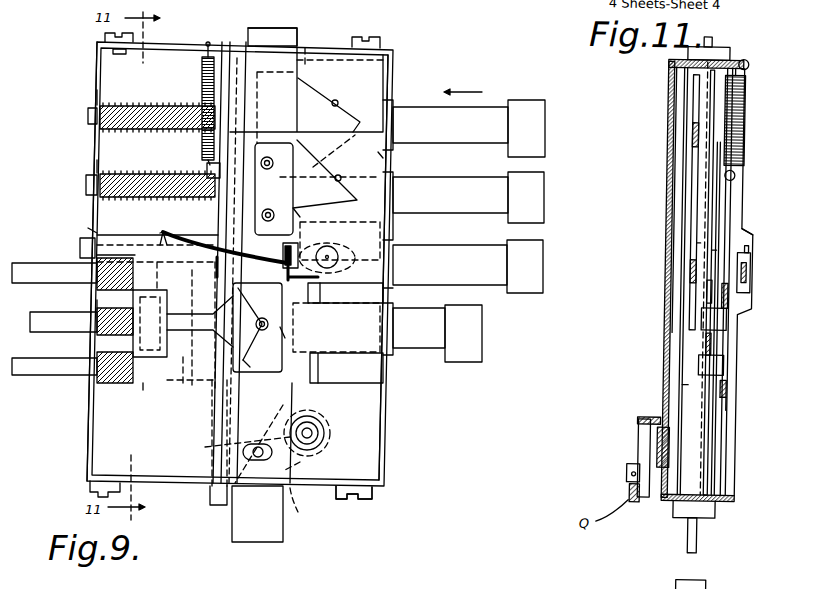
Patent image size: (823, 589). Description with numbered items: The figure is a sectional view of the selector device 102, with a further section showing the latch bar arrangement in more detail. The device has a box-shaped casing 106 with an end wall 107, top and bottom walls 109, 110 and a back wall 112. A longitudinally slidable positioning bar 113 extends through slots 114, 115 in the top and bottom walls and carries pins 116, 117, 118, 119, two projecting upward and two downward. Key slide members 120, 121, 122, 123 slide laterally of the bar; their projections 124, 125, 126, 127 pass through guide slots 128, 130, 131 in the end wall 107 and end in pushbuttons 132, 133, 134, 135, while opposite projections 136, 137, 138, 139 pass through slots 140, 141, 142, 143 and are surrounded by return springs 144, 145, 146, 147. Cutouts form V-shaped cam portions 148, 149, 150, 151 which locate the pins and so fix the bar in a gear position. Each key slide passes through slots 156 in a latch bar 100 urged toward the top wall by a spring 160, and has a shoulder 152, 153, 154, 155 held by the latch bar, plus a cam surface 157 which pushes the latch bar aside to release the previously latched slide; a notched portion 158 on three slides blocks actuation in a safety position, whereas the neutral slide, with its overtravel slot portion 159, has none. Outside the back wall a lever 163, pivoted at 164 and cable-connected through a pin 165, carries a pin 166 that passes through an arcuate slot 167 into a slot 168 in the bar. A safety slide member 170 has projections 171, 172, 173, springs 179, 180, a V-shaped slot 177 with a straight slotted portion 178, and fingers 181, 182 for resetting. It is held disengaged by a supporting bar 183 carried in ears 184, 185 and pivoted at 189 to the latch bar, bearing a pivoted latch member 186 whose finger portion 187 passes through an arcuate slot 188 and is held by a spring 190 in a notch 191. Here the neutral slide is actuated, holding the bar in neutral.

In FIG. 9, the latch bar 100 is at (214, 506).
In FIG. 11, the latch bar 100 is at (705, 519).
In FIG. 9, the selector device 102 is at (398, 481).
In FIG. 11, the selector device 102 is at (742, 497).
In FIG. 9, the casing 106 is at (88, 442).
In FIG. 9, the end wall 107 is at (388, 440).
In FIG. 9, the top wall 109 is at (340, 46).
In FIG. 9, the bottom wall 110 is at (322, 490).
In FIG. 11, the back wall 112 is at (665, 324).
In FIG. 9, the positioning bar 113 is at (249, 542).
In FIG. 11, the positioning bar 113 is at (692, 543).
In FIG. 9, the slot 114 is at (306, 46).
In FIG. 9, the slot 115 is at (307, 508).
In FIG. 9, the pin 116 is at (268, 157).
In FIG. 9, the pin 117 is at (268, 210).
In FIG. 9, the pin 118 is at (224, 327).
In FIG. 9, the pin 119 is at (283, 322).
In FIG. 9, the key slide member 120 is at (388, 76).
In FIG. 11, the key slide member 120 is at (707, 109).
In FIG. 9, the key slide member 121 is at (380, 155).
In FIG. 11, the key slide member 121 is at (718, 243).
In FIG. 9, the key slide member 122 is at (385, 288).
In FIG. 11, the key slide member 122 is at (696, 244).
In FIG. 9, the key slide member 123 is at (318, 371).
In FIG. 11, the key slide member 123 is at (684, 391).
In FIG. 9, the projection 124 is at (475, 134).
In FIG. 9, the projection 125 is at (480, 206).
In FIG. 9, the projection 126 is at (480, 276).
In FIG. 9, the projection 127 is at (432, 350).
In FIG. 9, the guide slot 128 is at (388, 105).
In FIG. 9, the guide slot 130 is at (393, 240).
In FIG. 9, the guide slot 131 is at (388, 362).
In FIG. 9, the pushbutton 132 is at (528, 100).
In FIG. 9, the pushbutton 133 is at (530, 186).
In FIG. 9, the pushbutton 134 is at (530, 255).
In FIG. 9, the pushbutton 135 is at (484, 325).
In FIG. 9, the projection 136 is at (88, 122).
In FIG. 11, the projection 136 is at (690, 133).
In FIG. 9, the projection 137 is at (86, 180).
In FIG. 11, the projection 137 is at (735, 200).
In FIG. 9, the projection 138 is at (80, 251).
In FIG. 11, the projection 138 is at (690, 272).
In FIG. 9, the projection 139 is at (50, 332).
In FIG. 11, the projection 139 is at (707, 340).
In FIG. 9, the slot 140 is at (97, 97).
In FIG. 9, the slot 141 is at (97, 165).
In FIG. 9, the slot 142 is at (88, 233).
In FIG. 9, the slot 143 is at (93, 306).
In FIG. 9, the spring 144 is at (155, 105).
In FIG. 9, the spring 145 is at (155, 173).
In FIG. 9, the spring 146 is at (128, 257).
In FIG. 9, the spring 147 is at (115, 333).
In FIG. 9, the V-shaped cam portion 148 is at (337, 102).
In FIG. 9, the V-shaped cam portion 149 is at (338, 176).
In FIG. 9, the V-shaped cam portion 150 is at (317, 210).
In FIG. 9, the V-shaped cam portion 151 is at (255, 354).
In FIG. 9, the shoulder 152 is at (303, 204).
In FIG. 9, the shoulder 153 is at (312, 230).
In FIG. 9, the shoulder 154 is at (352, 330).
In FIG. 9, the shoulder 155 is at (192, 402).
In FIG. 11, the slots 156 is at (690, 78).
In FIG. 9, the cam surface 157 is at (207, 166).
In FIG. 9, the notched portion 158 is at (170, 318).
In FIG. 9, the overtravel slot portion 159 is at (295, 342).
In FIG. 9, the spring 160 is at (204, 72).
In FIG. 11, the spring 160 is at (745, 84).
In FIG. 9, the lever 163 is at (300, 462).
In FIG. 9, the pivot 164 is at (312, 433).
In FIG. 9, the pin 165 is at (215, 463).
In FIG. 11, the pin 165 is at (630, 480).
In FIG. 9, the pin 166 is at (258, 445).
In FIG. 9, the arcuate slot 167 is at (288, 411).
In FIG. 9, the slot 168 is at (247, 450).
In FIG. 9, the safety slide member 170 is at (143, 385).
In FIG. 11, the safety slide member 170 is at (735, 382).
In FIG. 9, the projection 171 is at (52, 375).
In FIG. 11, the projection 171 is at (740, 399).
In FIG. 9, the projection 172 is at (28, 283).
In FIG. 11, the projection 172 is at (730, 297).
In FIG. 9, the projection 173 is at (393, 333).
In FIG. 9, the V-shaped slot 177 is at (213, 365).
In FIG. 9, the straight slotted portion 178 is at (185, 335).
In FIG. 9, the spring 179 is at (115, 283).
In FIG. 9, the spring 180 is at (115, 376).
In FIG. 11, the finger 181 is at (720, 320).
In FIG. 11, the finger 182 is at (715, 365).
In FIG. 9, the supporting bar 183 is at (160, 262).
In FIG. 11, the supporting bar 183 is at (750, 270).
In FIG. 9, the ear 184 is at (93, 216).
In FIG. 9, the ear 185 is at (393, 222).
In FIG. 11, the ear 185 is at (753, 236).
In FIG. 9, the pivoted latch member 186 is at (340, 262).
In FIG. 11, the latch finger portion 187 is at (750, 282).
In FIG. 9, the arcuate slot 188 is at (236, 238).
In FIG. 9, the pivotal connection 189 is at (220, 240).
In FIG. 11, the pivotal connection 189 is at (711, 252).
In FIG. 9, the spring 190 is at (156, 317).
In FIG. 9, the notch 191 is at (320, 285).